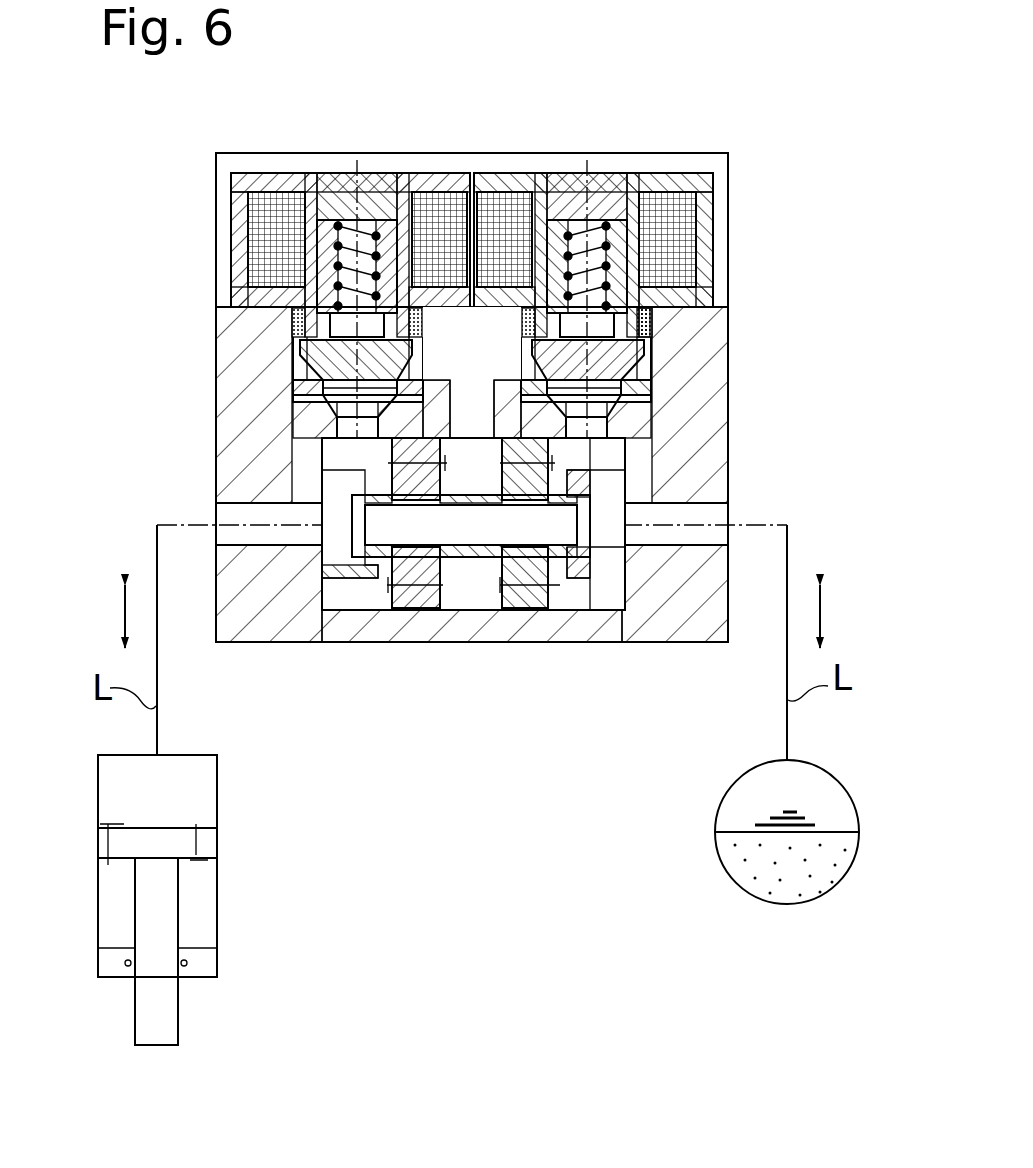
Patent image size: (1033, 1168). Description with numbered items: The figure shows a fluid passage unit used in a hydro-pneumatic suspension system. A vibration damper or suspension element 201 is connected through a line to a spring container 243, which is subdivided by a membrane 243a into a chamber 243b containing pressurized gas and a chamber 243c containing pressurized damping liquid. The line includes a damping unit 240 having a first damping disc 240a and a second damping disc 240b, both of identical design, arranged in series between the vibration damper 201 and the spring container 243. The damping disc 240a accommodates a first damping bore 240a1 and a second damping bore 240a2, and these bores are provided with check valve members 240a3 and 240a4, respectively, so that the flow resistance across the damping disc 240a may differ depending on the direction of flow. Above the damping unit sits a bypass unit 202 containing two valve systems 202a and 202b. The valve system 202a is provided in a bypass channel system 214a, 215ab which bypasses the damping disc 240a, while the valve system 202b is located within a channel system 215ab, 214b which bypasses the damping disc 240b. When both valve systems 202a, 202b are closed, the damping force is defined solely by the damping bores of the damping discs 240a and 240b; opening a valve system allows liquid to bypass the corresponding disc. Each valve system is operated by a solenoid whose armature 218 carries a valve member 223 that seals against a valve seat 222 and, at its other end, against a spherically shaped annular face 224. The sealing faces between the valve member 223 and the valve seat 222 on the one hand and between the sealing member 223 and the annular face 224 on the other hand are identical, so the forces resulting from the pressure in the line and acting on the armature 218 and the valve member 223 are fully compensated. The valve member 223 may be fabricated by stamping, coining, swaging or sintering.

The bypass unit 202 is at (742, 180).
The channel system portion 215ab is at (475, 345).
The armature 218 is at (690, 256).
The spherically shaped annular face 224 is at (657, 340).
The valve member 223 is at (657, 387).
The valve seat 222 is at (598, 408).
The first valve system 202a is at (330, 440).
The second valve system 202b is at (660, 430).
The bypass channel 214a is at (360, 450).
The bypass channel 214b is at (590, 420).
The damping unit 240 is at (553, 645).
The first damping disc 240a is at (500, 600).
The first damping bore 240a1 is at (410, 585).
The second damping bore 240a2 is at (390, 555).
The check valve member 240a3 is at (420, 590).
The check valve member 240a4 is at (450, 600).
The second damping disc 240b is at (553, 640).
The vibration damper 201 is at (222, 878).
The spring container 243 is at (838, 773).
The membrane 243a is at (730, 828).
The gas chamber 243b is at (748, 877).
The damping liquid chamber 243c is at (762, 788).